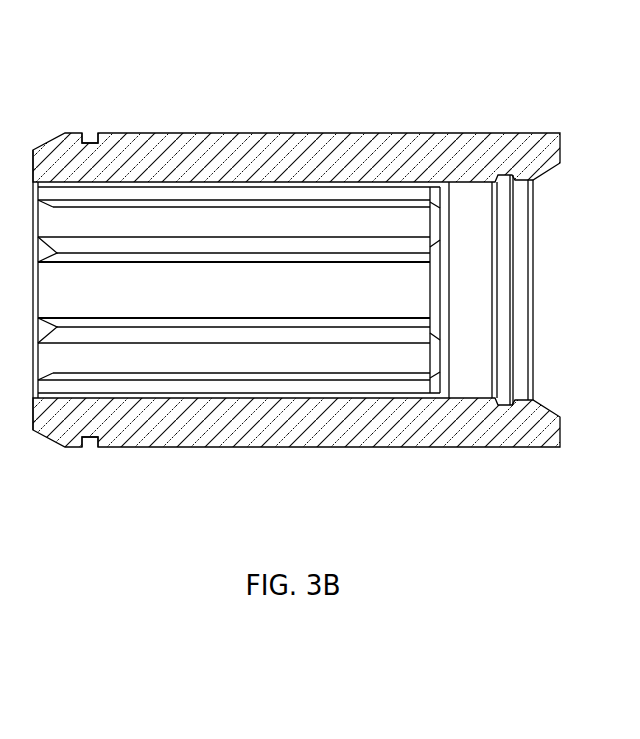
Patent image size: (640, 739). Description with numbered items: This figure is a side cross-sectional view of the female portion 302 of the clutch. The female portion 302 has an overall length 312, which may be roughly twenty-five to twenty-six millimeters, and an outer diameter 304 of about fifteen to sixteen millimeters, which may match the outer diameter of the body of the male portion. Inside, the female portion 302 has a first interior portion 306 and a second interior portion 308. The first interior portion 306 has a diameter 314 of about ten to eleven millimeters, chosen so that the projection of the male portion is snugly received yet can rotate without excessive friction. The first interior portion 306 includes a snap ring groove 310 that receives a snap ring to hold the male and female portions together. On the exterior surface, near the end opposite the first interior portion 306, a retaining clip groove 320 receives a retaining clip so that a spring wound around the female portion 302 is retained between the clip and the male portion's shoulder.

The female portion 302 is at (203, 89).
The outer diameter 304 is at (597, 133).
The first interior portion 306 is at (462, 212).
The second interior portion 308 is at (222, 287).
The snap ring groove 310 is at (505, 150).
The length 312 is at (35, 493).
The diameter 314 is at (572, 182).
The retaining clip groove 320 is at (88, 128).